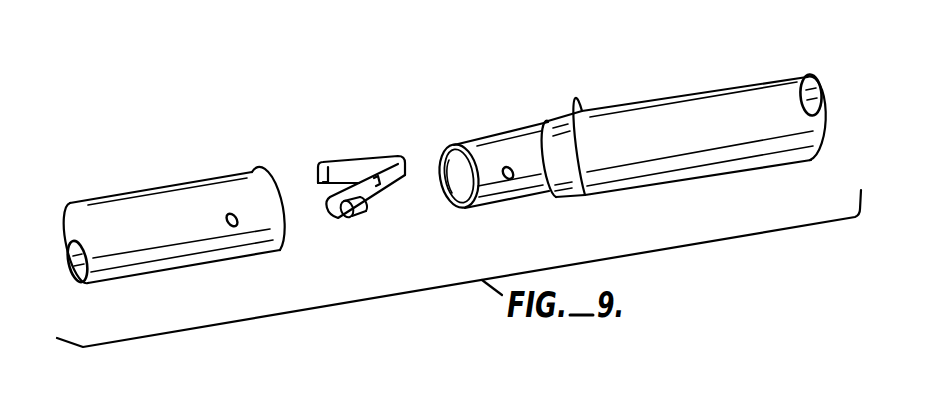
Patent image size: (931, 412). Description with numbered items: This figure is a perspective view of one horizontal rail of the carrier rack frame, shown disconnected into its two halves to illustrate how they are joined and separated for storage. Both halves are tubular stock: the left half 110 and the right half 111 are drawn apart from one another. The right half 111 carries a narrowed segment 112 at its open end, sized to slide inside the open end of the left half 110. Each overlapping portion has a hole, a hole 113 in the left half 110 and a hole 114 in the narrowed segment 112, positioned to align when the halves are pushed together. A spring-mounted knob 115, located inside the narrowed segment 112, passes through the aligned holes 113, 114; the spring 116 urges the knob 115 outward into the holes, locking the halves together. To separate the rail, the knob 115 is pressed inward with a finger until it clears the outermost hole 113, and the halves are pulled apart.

The left half 110 is at (162, 186).
The right half 111 is at (717, 88).
The narrowed segment 112 is at (493, 137).
The hole 113 is at (238, 226).
The hole 114 is at (511, 180).
The spring-mounted knob 115 is at (360, 222).
The spring 116 is at (353, 160).